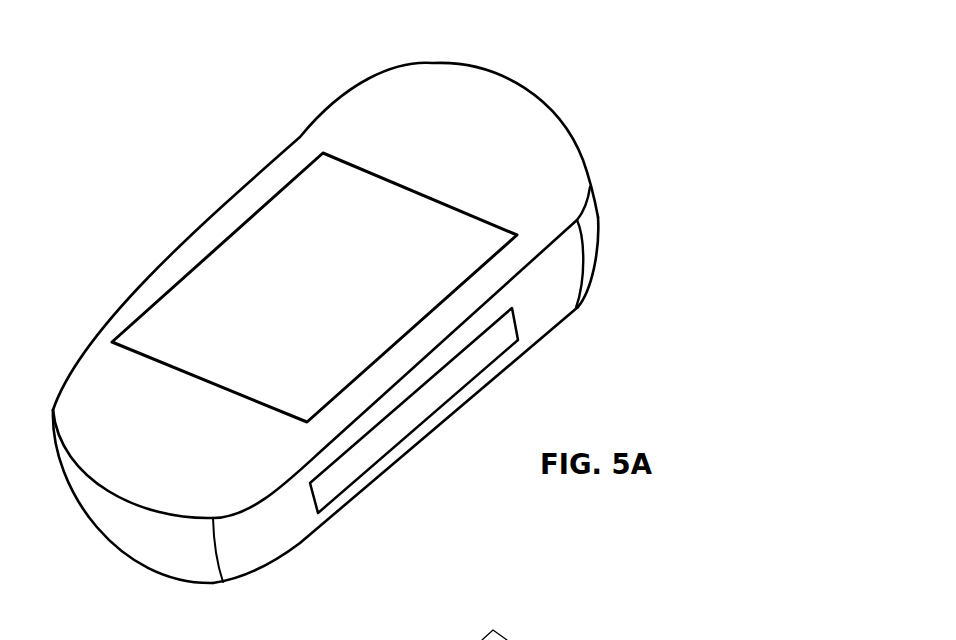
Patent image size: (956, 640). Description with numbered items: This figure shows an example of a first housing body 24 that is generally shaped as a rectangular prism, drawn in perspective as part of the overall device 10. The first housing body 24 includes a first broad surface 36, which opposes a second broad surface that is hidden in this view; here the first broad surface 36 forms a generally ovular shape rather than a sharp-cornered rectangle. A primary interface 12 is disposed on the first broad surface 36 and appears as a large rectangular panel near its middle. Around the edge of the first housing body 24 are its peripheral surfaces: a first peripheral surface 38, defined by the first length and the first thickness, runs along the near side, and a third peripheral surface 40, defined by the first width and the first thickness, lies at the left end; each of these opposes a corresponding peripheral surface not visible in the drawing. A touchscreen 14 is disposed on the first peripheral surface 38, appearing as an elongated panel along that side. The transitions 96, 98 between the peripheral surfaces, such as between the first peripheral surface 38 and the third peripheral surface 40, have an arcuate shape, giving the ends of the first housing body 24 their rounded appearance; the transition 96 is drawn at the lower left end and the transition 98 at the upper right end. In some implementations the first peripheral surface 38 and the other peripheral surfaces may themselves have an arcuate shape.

The portable electronic device 10 is at (385, 322).
The primary interface 12 is at (296, 304).
The touchscreen 14 is at (380, 440).
The first housing body 24 is at (517, 83).
The first broad surface 36 is at (503, 184).
The first peripheral surface 38 is at (539, 304).
The third peripheral surface 40 is at (168, 568).
The transition 96 is at (217, 558).
The transition 98 is at (582, 252).